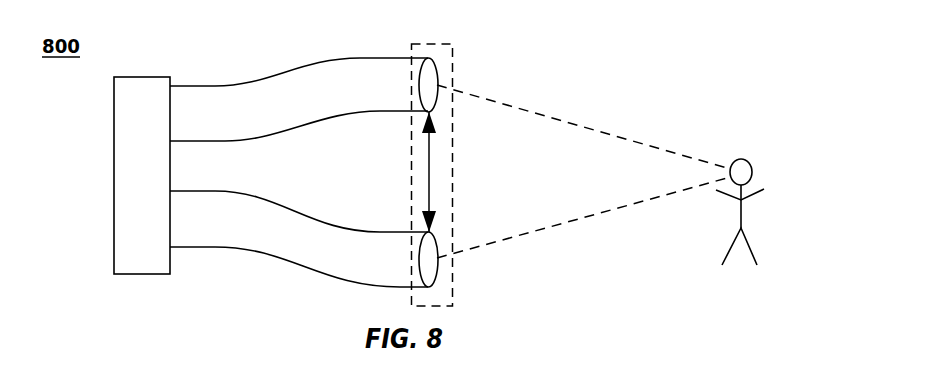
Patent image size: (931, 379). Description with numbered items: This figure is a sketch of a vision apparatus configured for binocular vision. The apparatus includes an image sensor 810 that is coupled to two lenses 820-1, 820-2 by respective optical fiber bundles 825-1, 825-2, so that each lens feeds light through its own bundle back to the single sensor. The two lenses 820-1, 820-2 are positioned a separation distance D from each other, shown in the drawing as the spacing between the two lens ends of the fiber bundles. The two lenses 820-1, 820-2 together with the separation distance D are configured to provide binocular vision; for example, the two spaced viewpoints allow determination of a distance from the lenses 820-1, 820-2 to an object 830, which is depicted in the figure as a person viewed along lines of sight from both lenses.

The image sensor 810 is at (123, 80).
The lens 820-1 is at (442, 80).
The lens 820-2 is at (442, 270).
The optical fiber bundle 825-1 is at (340, 57).
The optical fiber bundle 825-2 is at (298, 278).
The object 830 is at (767, 175).
The separation distance D is at (428, 184).